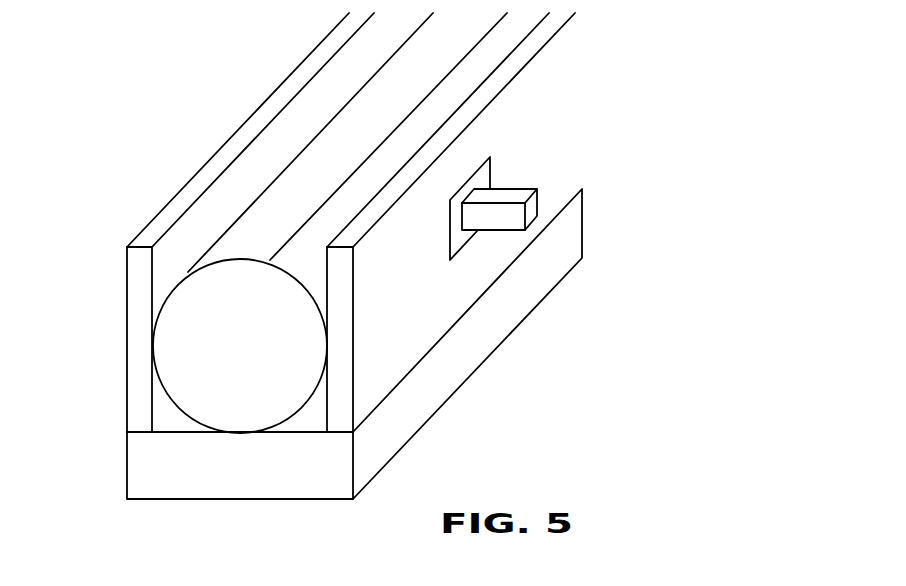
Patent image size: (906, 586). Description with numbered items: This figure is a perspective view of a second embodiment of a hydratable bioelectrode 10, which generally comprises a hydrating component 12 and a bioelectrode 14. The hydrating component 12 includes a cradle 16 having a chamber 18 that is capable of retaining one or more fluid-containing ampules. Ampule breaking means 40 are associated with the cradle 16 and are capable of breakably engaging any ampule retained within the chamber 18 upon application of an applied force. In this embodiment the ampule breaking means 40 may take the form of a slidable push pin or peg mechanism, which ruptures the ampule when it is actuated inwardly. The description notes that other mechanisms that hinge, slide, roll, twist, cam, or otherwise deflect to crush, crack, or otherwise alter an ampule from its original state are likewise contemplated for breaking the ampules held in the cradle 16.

The hydratable bioelectrode 10 is at (312, 279).
The hydrating component 12 is at (100, 251).
The bioelectrode 14 is at (100, 435).
The cradle 16 is at (183, 412).
The chamber 18 is at (262, 371).
The ampule breaking means 40 is at (510, 232).